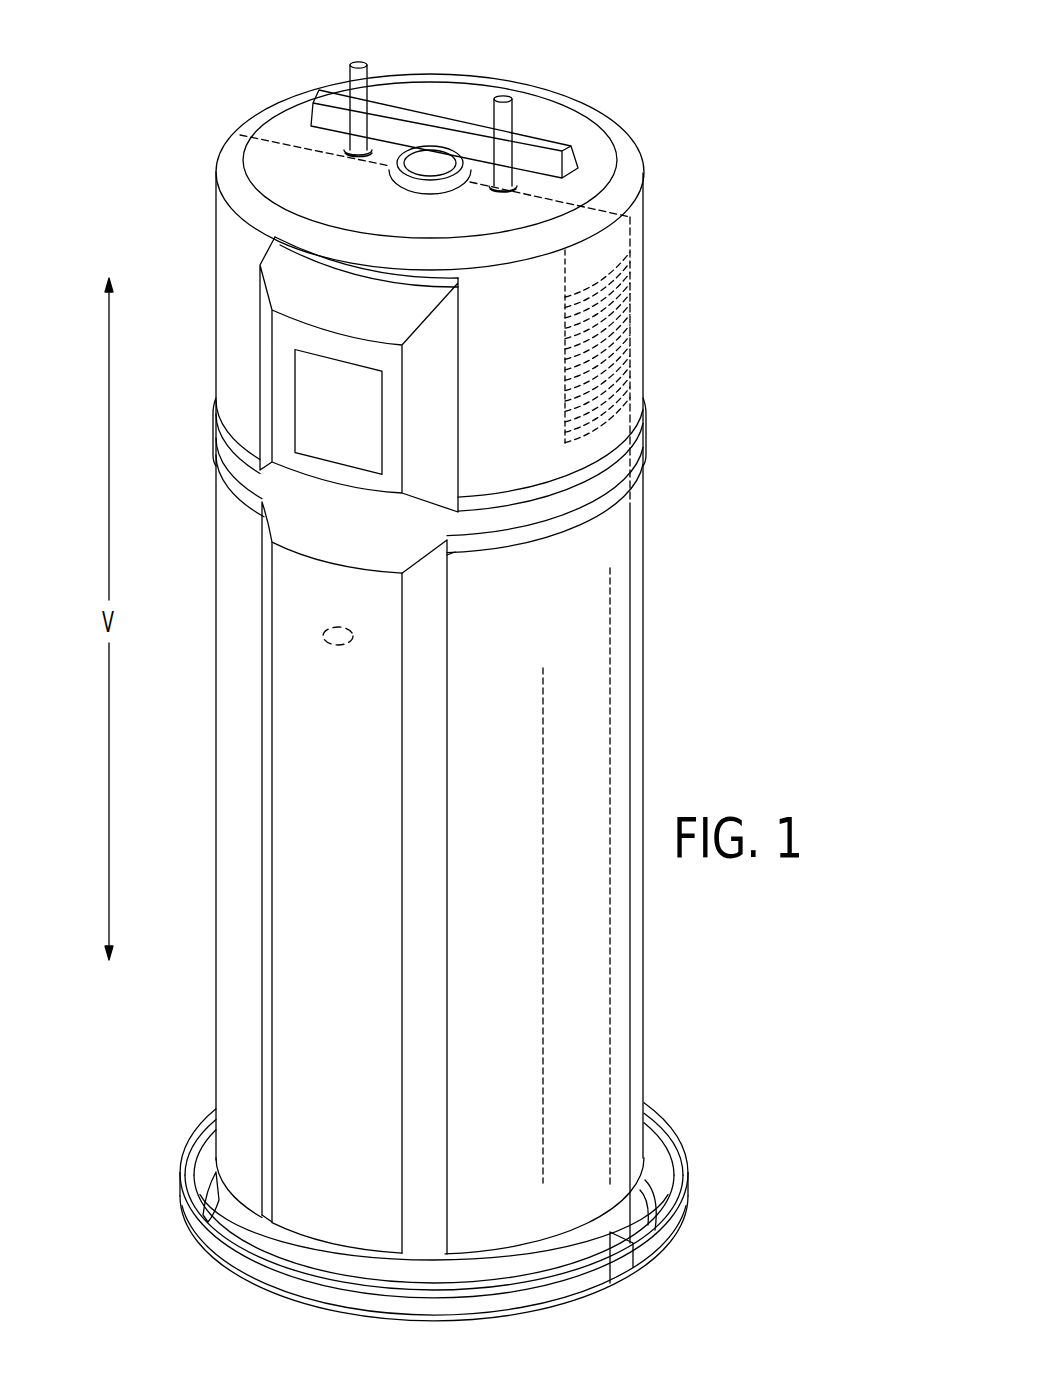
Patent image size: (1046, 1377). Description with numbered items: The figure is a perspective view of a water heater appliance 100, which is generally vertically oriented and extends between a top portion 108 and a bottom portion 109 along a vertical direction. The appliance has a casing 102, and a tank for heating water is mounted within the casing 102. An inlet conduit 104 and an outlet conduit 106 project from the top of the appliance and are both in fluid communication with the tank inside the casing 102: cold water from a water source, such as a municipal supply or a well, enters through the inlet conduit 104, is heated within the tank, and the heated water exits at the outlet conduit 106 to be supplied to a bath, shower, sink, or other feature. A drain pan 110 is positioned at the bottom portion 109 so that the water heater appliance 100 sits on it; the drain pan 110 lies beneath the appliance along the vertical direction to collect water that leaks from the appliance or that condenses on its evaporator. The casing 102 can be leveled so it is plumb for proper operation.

The water heater appliance 100 is at (688, 137).
The casing 102 is at (618, 613).
The inlet conduit 104 is at (358, 77).
The outlet conduit 106 is at (507, 117).
The top portion 108 is at (197, 168).
The bottom portion 109 is at (162, 1152).
The drain pan 110 is at (707, 1167).